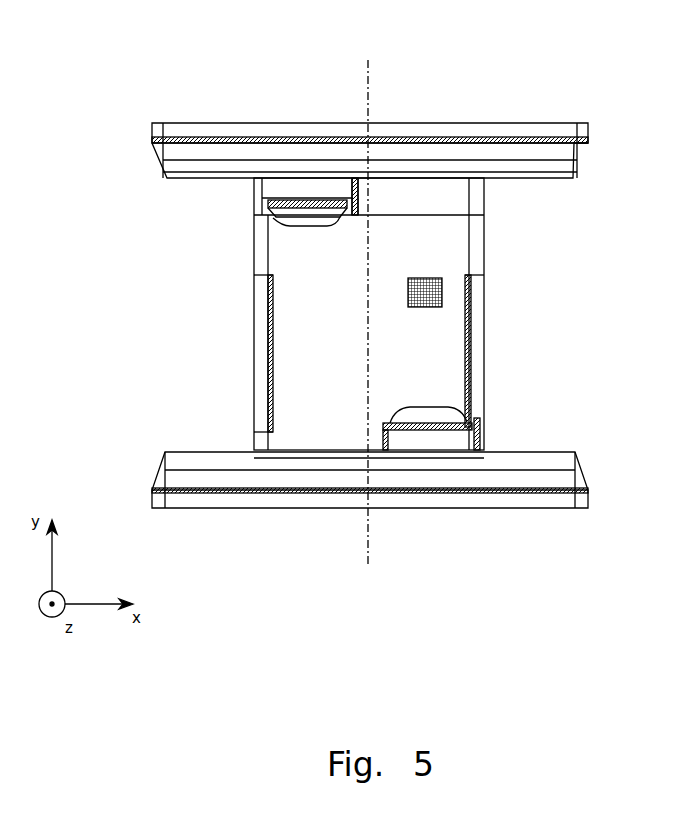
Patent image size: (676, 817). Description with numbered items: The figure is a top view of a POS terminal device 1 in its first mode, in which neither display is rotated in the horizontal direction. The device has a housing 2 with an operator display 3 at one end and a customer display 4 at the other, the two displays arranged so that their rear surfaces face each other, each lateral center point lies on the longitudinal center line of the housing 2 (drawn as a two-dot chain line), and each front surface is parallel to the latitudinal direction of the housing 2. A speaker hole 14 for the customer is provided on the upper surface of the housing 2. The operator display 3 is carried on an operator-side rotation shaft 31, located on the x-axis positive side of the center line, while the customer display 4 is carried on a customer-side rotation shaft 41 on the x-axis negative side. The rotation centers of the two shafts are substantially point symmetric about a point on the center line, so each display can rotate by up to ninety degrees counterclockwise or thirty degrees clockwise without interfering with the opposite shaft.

The POS terminal device 1 is at (125, 34).
The housing 2 is at (457, 260).
The operator display 3 is at (420, 497).
The customer display 4 is at (293, 131).
The speaker hole 14 is at (442, 299).
The operator-side rotation shaft 31 is at (453, 415).
The customer-side rotation shaft 41 is at (302, 217).